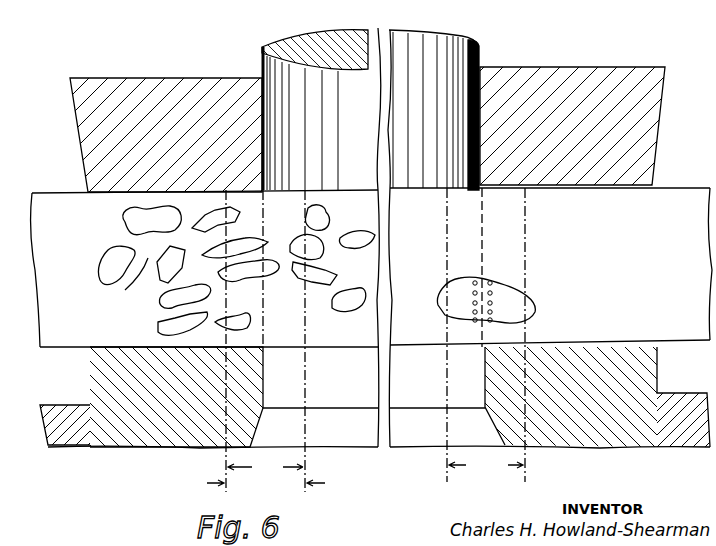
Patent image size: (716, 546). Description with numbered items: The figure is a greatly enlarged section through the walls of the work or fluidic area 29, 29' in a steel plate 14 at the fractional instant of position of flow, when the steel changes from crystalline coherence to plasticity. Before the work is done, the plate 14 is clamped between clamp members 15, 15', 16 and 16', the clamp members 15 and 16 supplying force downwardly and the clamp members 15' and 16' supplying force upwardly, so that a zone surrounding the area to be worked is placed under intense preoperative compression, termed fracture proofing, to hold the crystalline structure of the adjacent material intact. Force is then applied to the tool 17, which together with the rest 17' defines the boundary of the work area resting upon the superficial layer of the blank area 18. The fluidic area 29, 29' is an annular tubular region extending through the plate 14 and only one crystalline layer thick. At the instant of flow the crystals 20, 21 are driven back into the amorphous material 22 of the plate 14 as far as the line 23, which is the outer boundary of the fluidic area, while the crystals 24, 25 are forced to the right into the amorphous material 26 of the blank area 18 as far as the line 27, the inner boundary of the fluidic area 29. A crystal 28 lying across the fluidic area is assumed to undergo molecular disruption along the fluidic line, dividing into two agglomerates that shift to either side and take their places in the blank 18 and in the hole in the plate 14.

The plate 14 is at (63, 333).
The clamp member 15 is at (187, 135).
The clamp member 16 is at (531, 126).
The tool 17 is at (345, 109).
The rest 17' is at (358, 415).
The clamp member 15' is at (64, 448).
The clamp member 16' is at (656, 416).
The blank area 18 is at (420, 328).
The crystal 20 is at (212, 222).
The crystal 21 is at (184, 290).
The amorphous material 22 is at (123, 279).
The line 23 is at (203, 483).
The crystal 24 is at (318, 215).
The crystal 25 is at (322, 275).
The amorphous material 26 is at (349, 314).
The line 27 is at (330, 483).
The crystal 28 is at (515, 302).
The fluidic area 29 is at (265, 468).
The fluidic area 29' is at (486, 466).